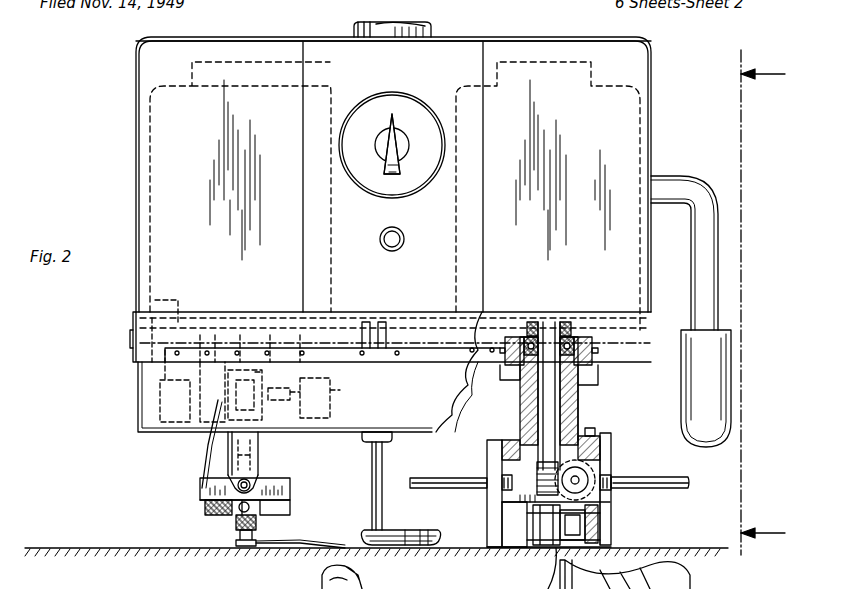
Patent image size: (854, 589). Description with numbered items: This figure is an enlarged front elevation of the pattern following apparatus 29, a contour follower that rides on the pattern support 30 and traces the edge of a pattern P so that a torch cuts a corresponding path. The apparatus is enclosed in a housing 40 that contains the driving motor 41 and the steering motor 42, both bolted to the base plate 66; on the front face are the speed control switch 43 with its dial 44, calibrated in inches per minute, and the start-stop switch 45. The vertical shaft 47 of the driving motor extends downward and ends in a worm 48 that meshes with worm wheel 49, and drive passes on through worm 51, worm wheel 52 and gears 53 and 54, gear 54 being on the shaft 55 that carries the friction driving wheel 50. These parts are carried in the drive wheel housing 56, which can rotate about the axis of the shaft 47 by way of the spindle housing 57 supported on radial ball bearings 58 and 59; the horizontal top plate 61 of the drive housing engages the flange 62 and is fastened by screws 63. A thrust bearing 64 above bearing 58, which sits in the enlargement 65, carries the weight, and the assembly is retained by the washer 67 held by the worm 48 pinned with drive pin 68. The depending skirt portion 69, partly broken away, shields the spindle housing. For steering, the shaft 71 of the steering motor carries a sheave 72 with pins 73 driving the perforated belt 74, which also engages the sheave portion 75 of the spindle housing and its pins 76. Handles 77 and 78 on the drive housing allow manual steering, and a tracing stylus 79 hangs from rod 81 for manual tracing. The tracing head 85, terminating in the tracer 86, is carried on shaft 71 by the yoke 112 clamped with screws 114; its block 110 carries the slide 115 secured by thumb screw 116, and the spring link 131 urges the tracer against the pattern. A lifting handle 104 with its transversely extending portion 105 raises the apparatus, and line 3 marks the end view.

The section line 3— 3 is at (763, 303).
The pattern following apparatus 29 is at (136, 97).
The pattern support 30 is at (652, 548).
The housing 40 is at (638, 70).
The driving motor 41 is at (628, 136).
The steering motor 42 is at (178, 161).
The speed control switch 43 is at (385, 182).
The dial 44 is at (413, 104).
The switch 45 is at (405, 239).
The vertical shaft 47 is at (540, 390).
The worm 48 is at (540, 470).
The worm wheel 49 is at (596, 470).
The friction driving wheel 50 is at (568, 578).
The worm 51 is at (600, 510).
The worm wheel 52 is at (598, 522).
The gear 53 is at (600, 515).
The gear 54 is at (590, 548).
The shaft 55 is at (602, 532).
The drive wheel housing 56 is at (490, 500).
The spindle housing 57 is at (580, 400).
The radial ball bearing 58 is at (580, 380).
The radial ball bearing 59 is at (598, 445).
The horizontal top plate 61 is at (598, 460).
The flange 62 is at (490, 440).
The screws 63 is at (598, 435).
The thrust bearing 64 is at (532, 323).
The enlargement 65 is at (558, 336).
The base plate 66 is at (340, 318).
The washer 67 is at (495, 478).
The drive pin 68 is at (514, 524).
The depending skirt portion 69 is at (415, 420).
The shaft 71 is at (222, 395).
The sheave 72 is at (212, 380).
The pins 73 is at (175, 370).
The perforated belt 74 is at (604, 288).
The sheave portion 75 is at (585, 365).
The pins 76 is at (590, 350).
The handle 77 is at (448, 485).
The handle 78 is at (658, 482).
The tracing stylus 79 is at (441, 537).
The rod 81 is at (372, 472).
The tracing head 85 is at (200, 496).
The tracer 86 is at (298, 536).
The handle 104 is at (730, 392).
The transversely extending portion 105 is at (675, 190).
The block 110 is at (265, 470).
The yoke 112 is at (262, 458).
The screws 114 is at (262, 442).
The slide 115 is at (278, 506).
The thumb screw 116 is at (220, 515).
The link 131 is at (208, 448).
The pattern P is at (340, 535).